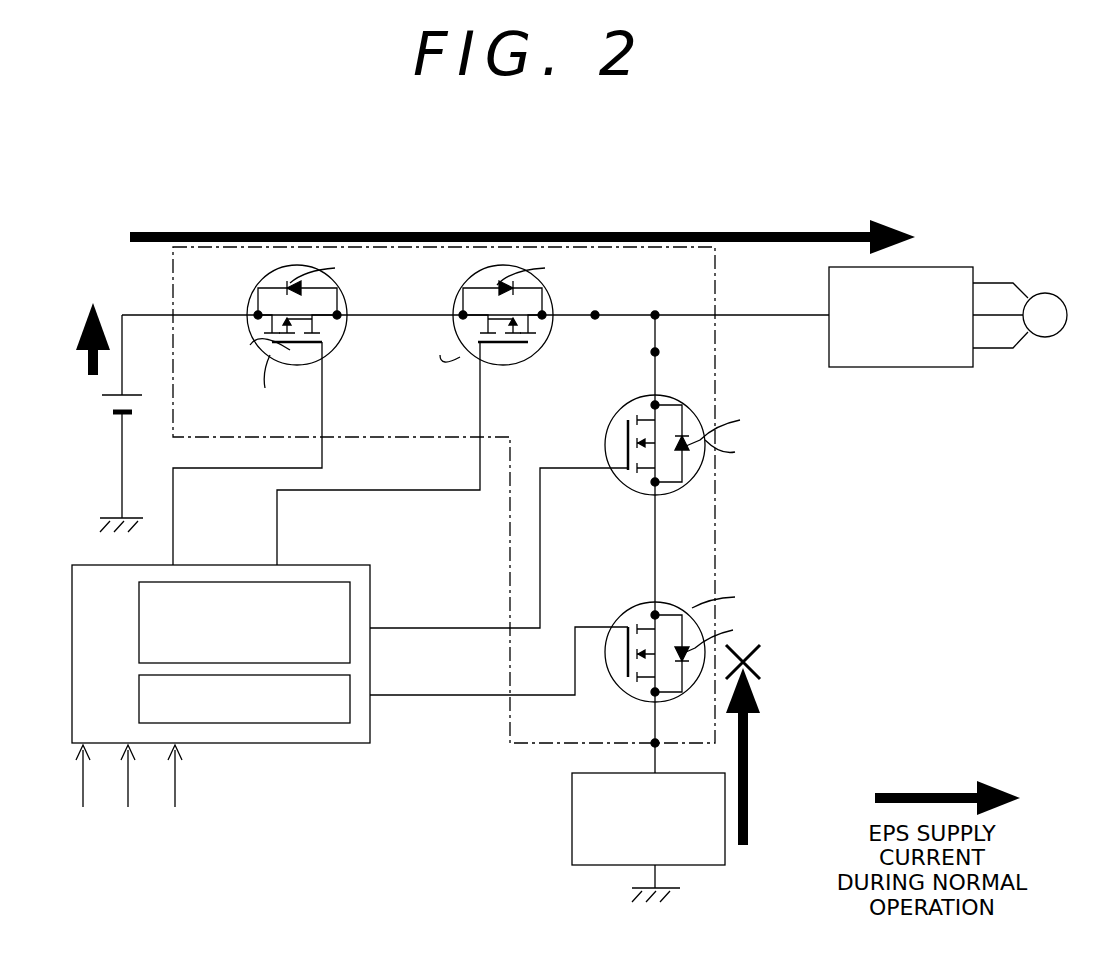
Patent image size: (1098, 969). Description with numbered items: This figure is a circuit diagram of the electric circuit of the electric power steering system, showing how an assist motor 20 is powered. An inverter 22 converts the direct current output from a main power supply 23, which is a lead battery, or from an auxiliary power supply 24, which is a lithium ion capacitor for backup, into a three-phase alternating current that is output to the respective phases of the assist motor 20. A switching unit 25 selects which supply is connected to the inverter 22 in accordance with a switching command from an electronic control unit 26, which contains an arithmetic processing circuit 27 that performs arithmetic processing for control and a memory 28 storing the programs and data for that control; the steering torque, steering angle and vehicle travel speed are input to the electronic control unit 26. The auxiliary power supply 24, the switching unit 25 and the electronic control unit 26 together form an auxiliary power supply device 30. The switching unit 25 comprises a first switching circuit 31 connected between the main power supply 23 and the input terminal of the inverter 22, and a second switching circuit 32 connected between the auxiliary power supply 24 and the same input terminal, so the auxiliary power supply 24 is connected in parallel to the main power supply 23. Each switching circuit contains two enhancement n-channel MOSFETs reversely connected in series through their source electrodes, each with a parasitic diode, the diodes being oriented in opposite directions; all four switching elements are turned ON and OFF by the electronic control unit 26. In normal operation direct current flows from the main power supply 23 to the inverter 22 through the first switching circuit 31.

The assist motor 20 is at (1045, 293).
The inverter 22 is at (953, 265).
The main power supply 23 is at (103, 403).
The auxiliary power supply 24 is at (572, 812).
The switching unit 25 is at (173, 268).
The electronic control unit 26 is at (248, 703).
The arithmetic processing circuit 27 is at (139, 620).
The memory 28 is at (139, 700).
The auxiliary power supply device 30 is at (907, 592).
The first switching circuit 31 is at (232, 228).
The second switching circuit 32 is at (832, 380).